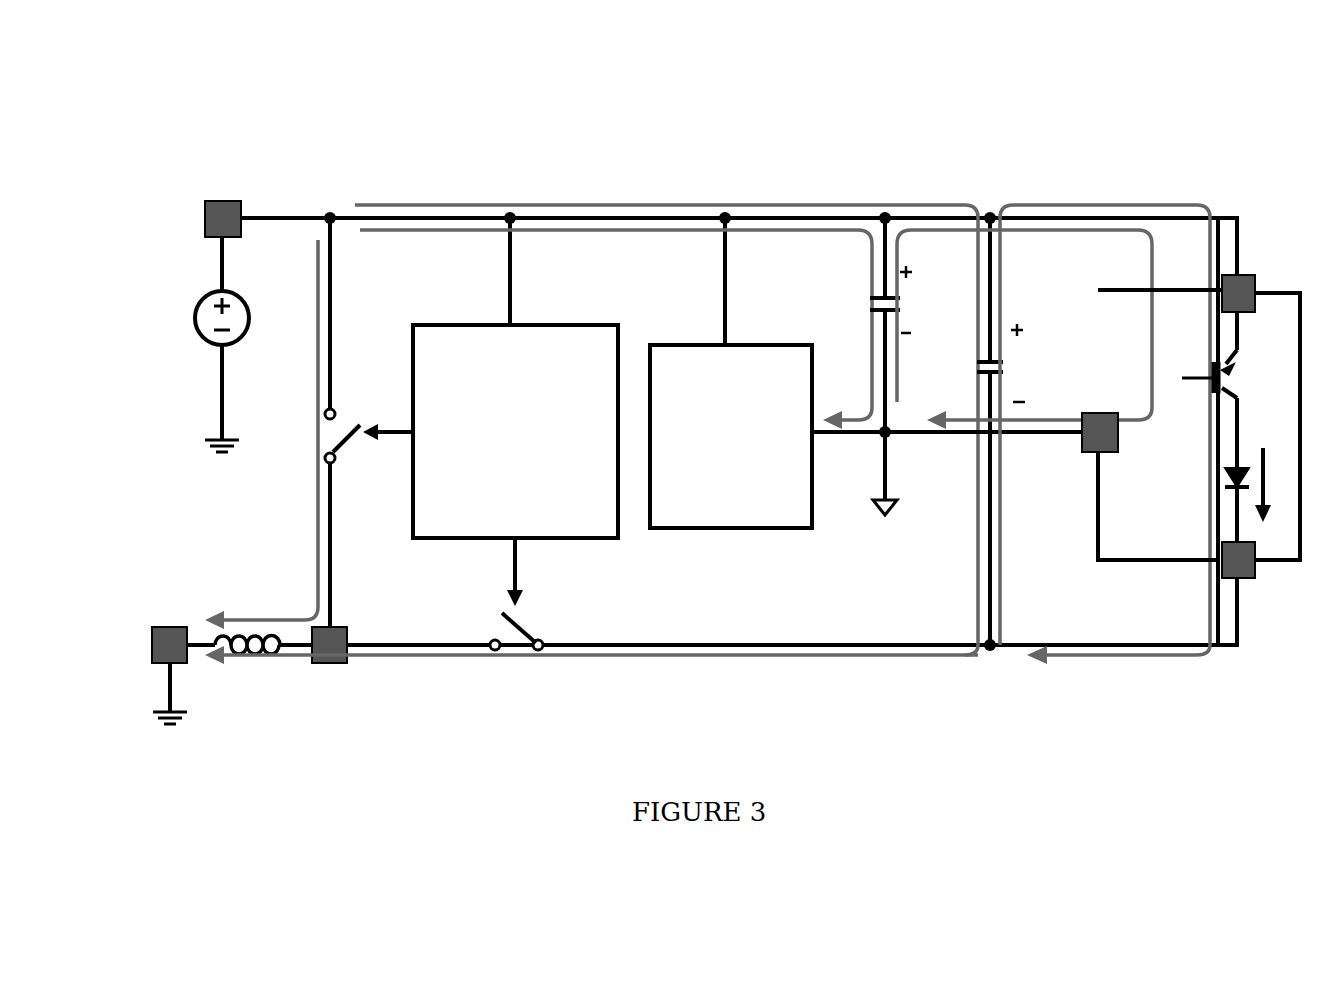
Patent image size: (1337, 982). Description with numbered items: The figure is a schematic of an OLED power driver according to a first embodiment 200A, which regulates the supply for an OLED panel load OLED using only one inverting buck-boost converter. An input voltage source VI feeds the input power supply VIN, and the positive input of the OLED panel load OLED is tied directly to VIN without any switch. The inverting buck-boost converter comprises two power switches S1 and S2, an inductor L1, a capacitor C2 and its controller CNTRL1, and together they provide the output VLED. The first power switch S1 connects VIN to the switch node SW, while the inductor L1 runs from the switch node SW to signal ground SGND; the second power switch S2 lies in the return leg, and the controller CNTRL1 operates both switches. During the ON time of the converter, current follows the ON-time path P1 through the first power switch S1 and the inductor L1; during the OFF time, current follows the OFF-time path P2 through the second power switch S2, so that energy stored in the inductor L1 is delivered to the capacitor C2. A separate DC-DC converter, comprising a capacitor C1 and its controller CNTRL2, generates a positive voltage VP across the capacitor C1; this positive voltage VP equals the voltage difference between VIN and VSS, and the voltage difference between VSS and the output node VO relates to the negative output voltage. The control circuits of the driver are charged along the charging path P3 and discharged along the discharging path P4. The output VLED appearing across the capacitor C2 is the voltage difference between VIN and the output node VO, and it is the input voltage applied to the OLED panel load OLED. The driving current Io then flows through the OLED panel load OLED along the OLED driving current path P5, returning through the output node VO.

The OLED power driver embodiment 200A is at (1010, 158).
The input power supply VIN is at (727, 256).
The input voltage source VI is at (206, 344).
The first power switch S1 is at (345, 422).
The ON-time path of IBBC P1 is at (312, 498).
The signal ground SGND is at (157, 656).
The inductor L1 is at (249, 668).
The switch node SW is at (325, 664).
The IBBC controller CNTRL1 is at (515, 431).
The second power switch S2 is at (516, 620).
The OFF-time path of IBBC P2 is at (694, 667).
The charging path for control circuits P3 is at (642, 238).
The DC-DC converter controller CNTRL2 is at (866, 436).
The DC-DC converter capacitor C1 is at (864, 359).
The positive voltage VP is at (921, 299).
The negative supply node VSS is at (913, 526).
The IBBC output capacitor C2 is at (972, 431).
The OLED driving voltage VLED is at (1049, 363).
The discharging path for control circuits P4 is at (1101, 240).
The OLED driving current path P5 is at (1068, 670).
The OLED panel load OLED is at (1165, 425).
The output current Io is at (1276, 485).
The output voltage node VO is at (1259, 578).